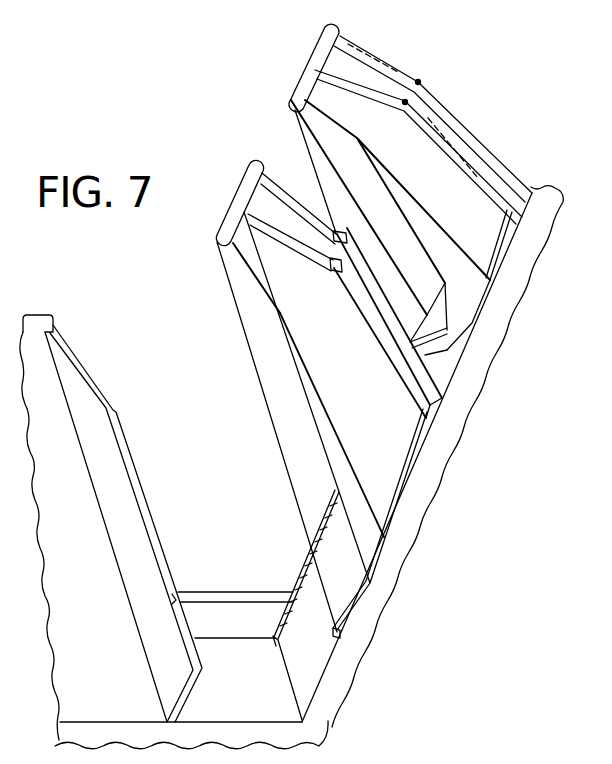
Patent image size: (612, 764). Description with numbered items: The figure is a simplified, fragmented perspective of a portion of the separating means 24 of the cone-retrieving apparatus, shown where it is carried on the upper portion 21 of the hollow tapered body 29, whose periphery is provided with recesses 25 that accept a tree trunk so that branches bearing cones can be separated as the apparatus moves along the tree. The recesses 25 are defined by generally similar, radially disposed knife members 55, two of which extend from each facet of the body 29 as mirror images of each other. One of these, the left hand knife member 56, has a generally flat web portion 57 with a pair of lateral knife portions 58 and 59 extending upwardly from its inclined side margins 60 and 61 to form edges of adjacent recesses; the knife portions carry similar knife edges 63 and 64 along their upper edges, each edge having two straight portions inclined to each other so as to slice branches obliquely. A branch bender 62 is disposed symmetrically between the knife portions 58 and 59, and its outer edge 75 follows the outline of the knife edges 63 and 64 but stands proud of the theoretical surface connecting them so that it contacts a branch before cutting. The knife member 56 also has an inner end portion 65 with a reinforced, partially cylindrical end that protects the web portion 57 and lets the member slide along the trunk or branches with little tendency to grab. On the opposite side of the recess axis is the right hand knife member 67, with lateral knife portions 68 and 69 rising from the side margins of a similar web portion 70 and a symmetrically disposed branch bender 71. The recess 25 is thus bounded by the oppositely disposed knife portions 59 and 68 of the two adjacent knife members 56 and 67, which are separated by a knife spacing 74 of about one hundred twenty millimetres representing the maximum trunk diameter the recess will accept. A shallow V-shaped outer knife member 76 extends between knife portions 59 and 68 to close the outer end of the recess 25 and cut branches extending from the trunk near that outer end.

The upper portion 21 is at (290, 373).
The separating means 24 is at (290, 373).
The recess 25 is at (136, 405).
The hollow tapered body 29 is at (323, 707).
The knife members 55 is at (268, 422).
The knife member 56 is at (307, 457).
The web portion 57 is at (363, 525).
The knife portion 58 is at (275, 382).
The knife portion 59 is at (310, 226).
The inclined side margin 60 is at (292, 487).
The inclined side margin 61 is at (263, 225).
The branch bender 62 is at (388, 419).
The knife edge 63 is at (317, 403).
The knife edge 64 is at (373, 287).
The inner end portion 65 is at (236, 208).
The knife member 67 is at (343, 97).
The knife portion 68 is at (367, 187).
The knife portion 69 is at (462, 154).
The web portion 70 is at (412, 212).
The branch bender 71 is at (387, 117).
The knife spacing 74 is at (293, 127).
The outer edge 75 is at (362, 308).
The outer knife member 76 is at (425, 355).